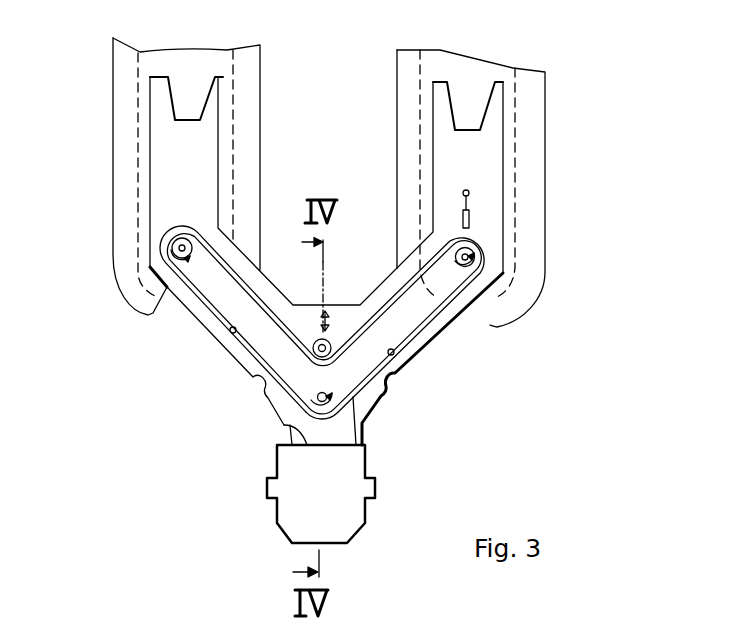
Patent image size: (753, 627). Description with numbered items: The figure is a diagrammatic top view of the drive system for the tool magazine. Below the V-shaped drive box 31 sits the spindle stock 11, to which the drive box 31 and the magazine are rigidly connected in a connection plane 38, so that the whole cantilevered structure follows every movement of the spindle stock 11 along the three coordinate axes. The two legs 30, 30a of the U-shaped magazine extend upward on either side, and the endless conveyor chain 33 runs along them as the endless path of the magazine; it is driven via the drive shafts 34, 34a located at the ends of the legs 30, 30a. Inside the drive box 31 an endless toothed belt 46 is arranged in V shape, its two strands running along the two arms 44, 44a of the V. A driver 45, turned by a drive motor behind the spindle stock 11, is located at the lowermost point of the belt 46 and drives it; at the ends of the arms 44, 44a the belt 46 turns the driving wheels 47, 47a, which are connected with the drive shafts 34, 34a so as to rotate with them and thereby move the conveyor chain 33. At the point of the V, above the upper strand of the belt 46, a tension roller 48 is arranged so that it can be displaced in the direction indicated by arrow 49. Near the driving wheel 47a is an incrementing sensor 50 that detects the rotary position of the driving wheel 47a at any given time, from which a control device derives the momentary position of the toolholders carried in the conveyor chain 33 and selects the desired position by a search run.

The spindle stock 11 is at (348, 507).
The leg of the magazine 30 is at (123, 153).
The leg of the magazine 30a is at (532, 140).
The drive box 31 is at (243, 355).
The conveyor chain 33 is at (138, 80).
The drive shaft 34 is at (183, 231).
The drive shaft 34a is at (470, 240).
The connection plane 38 is at (313, 437).
The arm 44 is at (227, 307).
The arm 44a is at (420, 308).
The driver 45 is at (340, 408).
The toothed belt 46 is at (233, 330).
The driving wheel 47 is at (172, 247).
The driving wheel 47a is at (476, 262).
The tension roller 48 is at (314, 338).
The arrow 49 is at (328, 320).
The sensor 50 is at (470, 218).